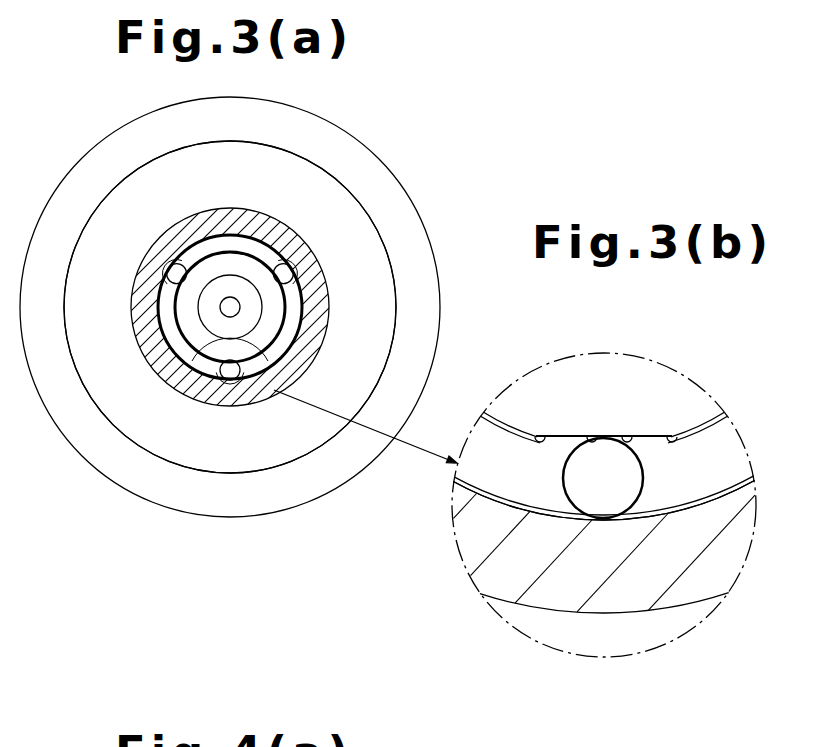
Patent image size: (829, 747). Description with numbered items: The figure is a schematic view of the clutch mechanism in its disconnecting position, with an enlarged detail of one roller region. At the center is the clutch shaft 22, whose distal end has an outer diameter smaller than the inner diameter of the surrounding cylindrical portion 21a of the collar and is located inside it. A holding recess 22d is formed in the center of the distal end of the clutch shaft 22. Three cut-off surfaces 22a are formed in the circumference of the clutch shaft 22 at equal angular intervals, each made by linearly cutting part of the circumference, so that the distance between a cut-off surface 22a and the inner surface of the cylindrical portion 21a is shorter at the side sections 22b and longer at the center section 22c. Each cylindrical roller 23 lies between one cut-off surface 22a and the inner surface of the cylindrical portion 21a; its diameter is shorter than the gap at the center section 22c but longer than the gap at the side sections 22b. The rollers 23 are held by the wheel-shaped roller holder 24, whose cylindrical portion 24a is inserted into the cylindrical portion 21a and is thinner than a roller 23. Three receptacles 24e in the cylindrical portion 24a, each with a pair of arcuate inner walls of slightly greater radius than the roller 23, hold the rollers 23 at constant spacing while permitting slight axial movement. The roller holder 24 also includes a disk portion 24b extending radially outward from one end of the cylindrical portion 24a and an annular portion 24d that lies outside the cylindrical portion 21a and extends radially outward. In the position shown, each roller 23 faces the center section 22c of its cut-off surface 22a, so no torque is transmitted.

In FIG. 3A, the cylindrical portion 21a is at (280, 238).
In FIG. 3B, the cylindrical portion 21a is at (733, 562).
In FIG. 3A, the clutch shaft 22 is at (273, 313).
In FIG. 3B, the clutch shaft 22 is at (579, 370).
In FIG. 3A, the cut-off surface 22a is at (180, 263).
In FIG. 3B, the cut-off surface 22a is at (630, 440).
In FIG. 3B, the side section 22b is at (536, 436).
In FIG. 3B, the center section 22c is at (588, 440).
In FIG. 3A, the holding recess 22d is at (212, 308).
In FIG. 3A, the roller 23 is at (170, 271).
In FIG. 3B, the roller 23 is at (603, 497).
In FIG. 3A, the roller holder 24 is at (362, 137).
In FIG. 3A, the cylindrical portion 24a is at (283, 347).
In FIG. 3B, the cylindrical portion 24a is at (725, 427).
In FIG. 3A, the disk portion 24b is at (396, 300).
In FIG. 3A, the annular portion 24d is at (400, 197).
In FIG. 3A, the receptacle 24e is at (275, 266).
In FIG. 3B, the receptacle 24e is at (636, 488).